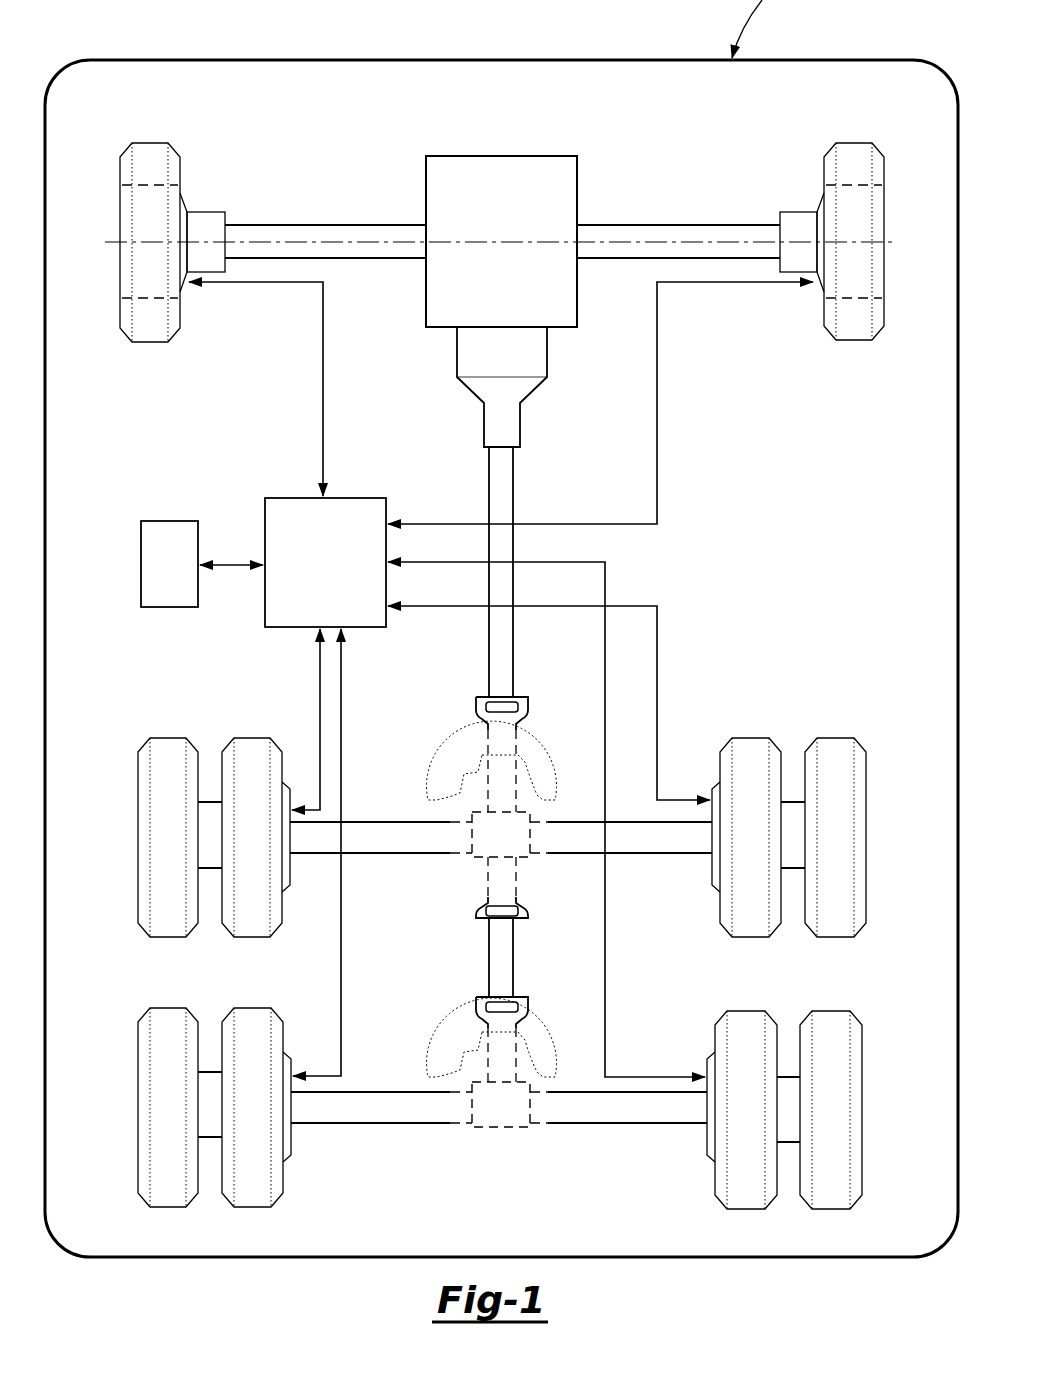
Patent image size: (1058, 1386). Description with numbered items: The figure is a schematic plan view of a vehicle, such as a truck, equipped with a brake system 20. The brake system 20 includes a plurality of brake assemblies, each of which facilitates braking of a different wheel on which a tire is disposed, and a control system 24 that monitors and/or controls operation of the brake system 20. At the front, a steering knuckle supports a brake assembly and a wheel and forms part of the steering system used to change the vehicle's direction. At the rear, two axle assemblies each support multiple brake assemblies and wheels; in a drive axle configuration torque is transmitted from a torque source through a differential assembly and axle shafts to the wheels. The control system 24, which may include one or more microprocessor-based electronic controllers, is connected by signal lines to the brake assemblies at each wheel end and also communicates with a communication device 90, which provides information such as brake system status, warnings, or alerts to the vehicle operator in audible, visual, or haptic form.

The brake system 20 is at (498, 952).
The control system 24 is at (313, 572).
The communication device 90 is at (160, 570).